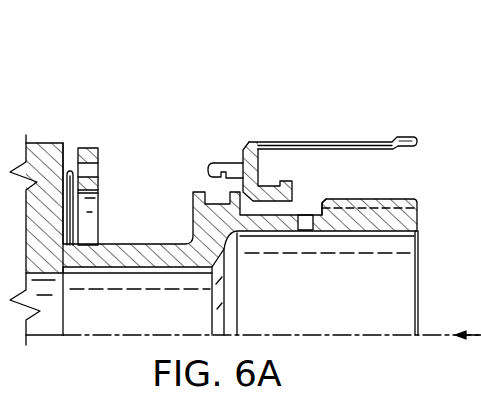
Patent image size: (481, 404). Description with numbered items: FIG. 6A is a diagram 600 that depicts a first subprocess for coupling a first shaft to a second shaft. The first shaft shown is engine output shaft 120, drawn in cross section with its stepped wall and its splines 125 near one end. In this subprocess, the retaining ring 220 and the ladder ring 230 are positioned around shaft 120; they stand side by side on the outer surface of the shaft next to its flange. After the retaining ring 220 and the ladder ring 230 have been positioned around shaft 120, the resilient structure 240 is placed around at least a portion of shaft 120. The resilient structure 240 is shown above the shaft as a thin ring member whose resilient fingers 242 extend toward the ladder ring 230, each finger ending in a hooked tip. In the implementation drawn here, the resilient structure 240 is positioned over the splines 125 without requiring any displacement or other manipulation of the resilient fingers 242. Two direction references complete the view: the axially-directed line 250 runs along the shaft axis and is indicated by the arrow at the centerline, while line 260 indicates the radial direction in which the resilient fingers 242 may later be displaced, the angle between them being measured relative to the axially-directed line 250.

The diagram 600 is at (101, 80).
The engine output shaft 120 is at (152, 243).
The splines 125 is at (381, 199).
The retaining ring 220 is at (70, 170).
The ladder ring 230 is at (90, 148).
The resilient structure 240 is at (418, 131).
The resilient fingers 242 is at (243, 158).
The axially-directed line 250 is at (480, 343).
The line 260 is at (480, 305).